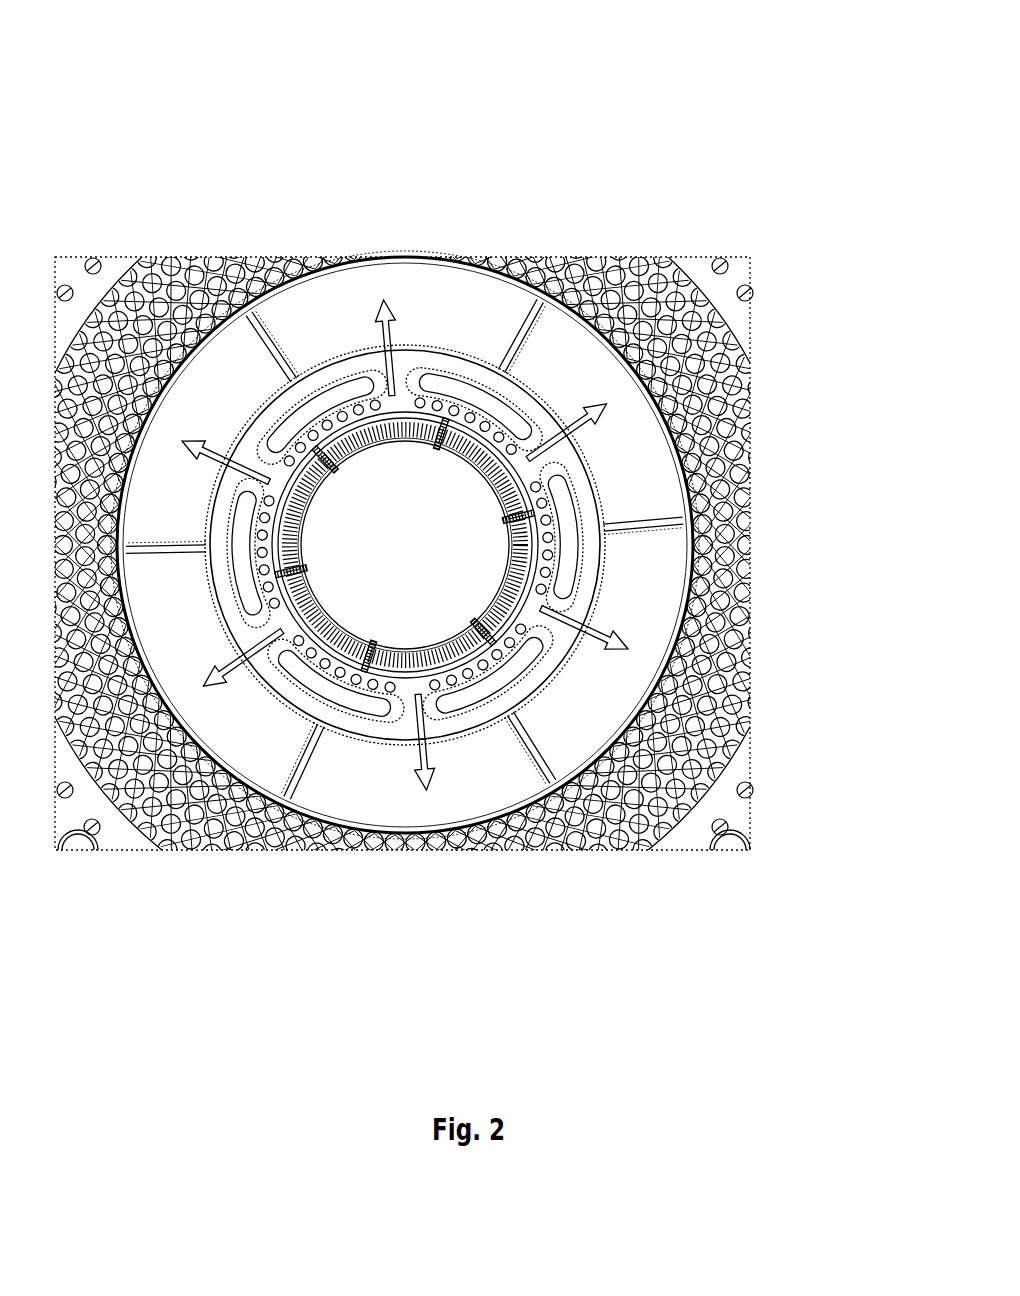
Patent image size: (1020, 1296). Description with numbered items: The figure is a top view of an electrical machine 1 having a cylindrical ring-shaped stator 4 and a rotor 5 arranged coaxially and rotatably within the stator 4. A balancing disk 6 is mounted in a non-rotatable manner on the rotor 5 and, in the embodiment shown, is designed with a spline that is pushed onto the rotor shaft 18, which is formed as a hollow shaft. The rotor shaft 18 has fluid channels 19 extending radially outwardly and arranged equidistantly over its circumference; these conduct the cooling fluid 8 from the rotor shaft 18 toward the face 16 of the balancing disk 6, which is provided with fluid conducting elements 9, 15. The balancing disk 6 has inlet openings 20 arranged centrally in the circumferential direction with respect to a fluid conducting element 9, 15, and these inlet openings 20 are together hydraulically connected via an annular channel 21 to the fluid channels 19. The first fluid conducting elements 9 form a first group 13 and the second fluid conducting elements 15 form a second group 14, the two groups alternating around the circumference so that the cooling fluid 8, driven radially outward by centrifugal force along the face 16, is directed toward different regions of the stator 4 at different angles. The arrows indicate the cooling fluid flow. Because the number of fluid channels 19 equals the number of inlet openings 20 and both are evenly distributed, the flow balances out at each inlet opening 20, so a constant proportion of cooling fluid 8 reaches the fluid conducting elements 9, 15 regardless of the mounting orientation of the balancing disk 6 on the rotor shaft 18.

The electrical machine 1 is at (278, 144).
The stator 4 is at (650, 279).
The rotor 5 is at (411, 686).
The balancing disk 6 is at (690, 446).
The cooling fluid 8 is at (177, 673).
The first fluid conducting element 9 is at (379, 569).
The first group of fluid conducting elements 13 is at (566, 358).
The second group of fluid conducting elements 14 is at (408, 292).
The second fluid conducting element 15 is at (430, 526).
The face 16 is at (364, 791).
The rotor shaft 18 is at (463, 722).
The fluid channels 19 is at (354, 463).
The inlet openings 20 is at (391, 382).
The annular channel 21 is at (340, 642).